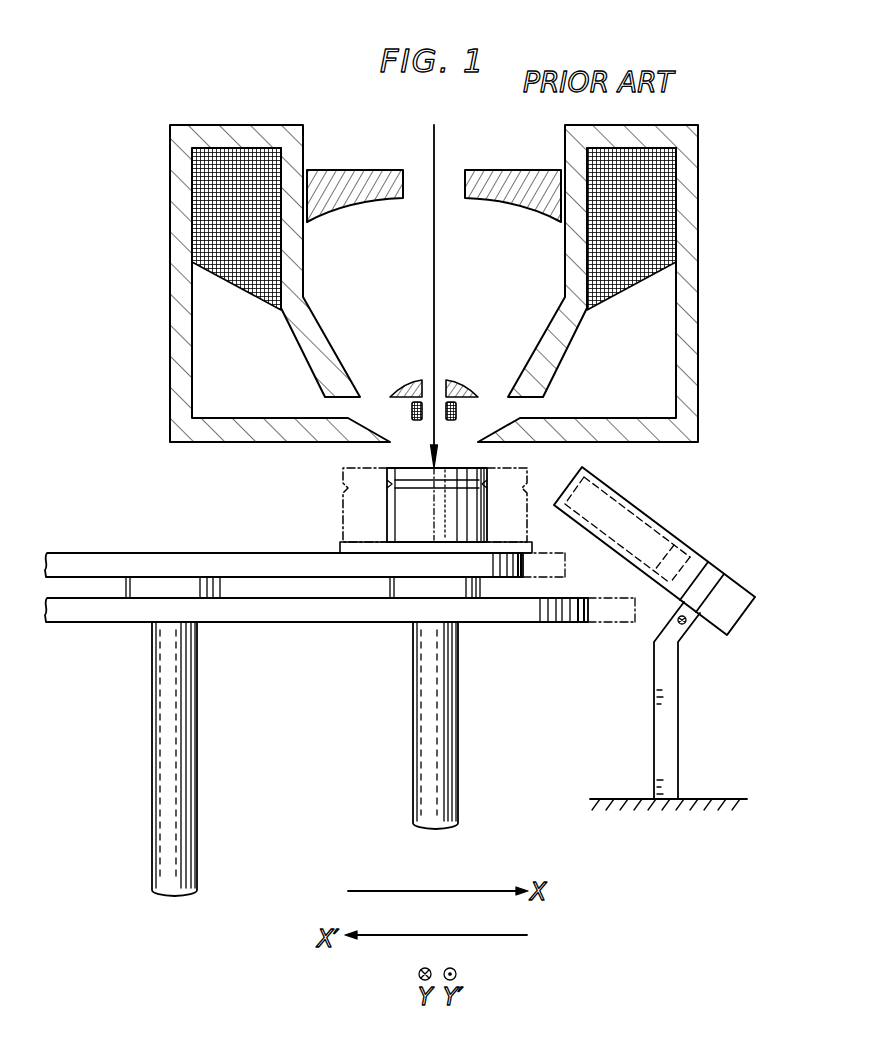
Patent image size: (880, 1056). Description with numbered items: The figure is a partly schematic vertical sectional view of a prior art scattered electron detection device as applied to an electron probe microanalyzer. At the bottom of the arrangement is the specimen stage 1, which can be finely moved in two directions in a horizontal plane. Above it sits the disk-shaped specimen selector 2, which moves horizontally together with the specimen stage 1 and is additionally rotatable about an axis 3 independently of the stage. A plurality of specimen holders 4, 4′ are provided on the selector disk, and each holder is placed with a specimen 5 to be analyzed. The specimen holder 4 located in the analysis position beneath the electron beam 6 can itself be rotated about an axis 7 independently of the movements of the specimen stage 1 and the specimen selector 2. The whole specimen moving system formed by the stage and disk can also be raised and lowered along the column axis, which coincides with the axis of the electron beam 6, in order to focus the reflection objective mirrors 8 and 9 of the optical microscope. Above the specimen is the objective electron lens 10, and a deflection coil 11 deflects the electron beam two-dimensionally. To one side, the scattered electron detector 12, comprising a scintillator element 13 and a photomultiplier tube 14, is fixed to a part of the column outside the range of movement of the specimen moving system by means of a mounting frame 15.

The specimen stage 1 is at (510, 621).
The disk-shaped specimen selector 2 is at (242, 559).
The axis 3 is at (192, 710).
The specimen holder 4 is at (472, 470).
The specimen holder 4′ is at (537, 483).
The specimen 5 is at (425, 466).
The electron beam 6 is at (437, 139).
The axis 7 is at (458, 713).
The reflection objective mirror 8 is at (349, 206).
The reflection objective mirror 9 is at (465, 388).
The objective electron lens 10 is at (176, 290).
The deflection coil 11 is at (411, 411).
The scattered electron detector 12 is at (673, 543).
The scintillator element 13 is at (588, 481).
The photomultiplier tube 14 is at (687, 540).
The mounting frame 15 is at (668, 755).